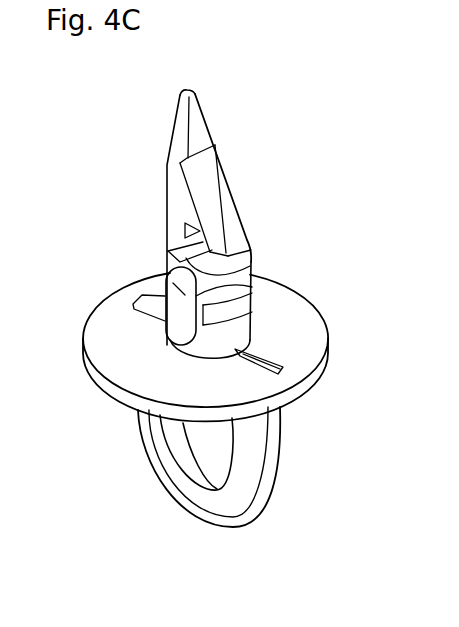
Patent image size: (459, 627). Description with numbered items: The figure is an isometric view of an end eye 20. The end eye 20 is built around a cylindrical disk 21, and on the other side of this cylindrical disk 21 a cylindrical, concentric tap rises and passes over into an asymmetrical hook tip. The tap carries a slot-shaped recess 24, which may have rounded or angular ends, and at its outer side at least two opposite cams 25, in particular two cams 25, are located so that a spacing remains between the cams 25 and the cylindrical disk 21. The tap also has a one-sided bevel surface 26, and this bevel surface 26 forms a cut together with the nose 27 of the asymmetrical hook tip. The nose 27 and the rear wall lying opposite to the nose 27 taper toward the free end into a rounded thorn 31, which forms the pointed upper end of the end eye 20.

The end eye 20 is at (458, 6).
The cylindrical disk 21 is at (288, 342).
The slot-shaped recess 24 is at (168, 275).
The cams 25 is at (235, 300).
The bevel surface 26 is at (227, 267).
The nose 27 is at (226, 214).
The rounded thorn 31 is at (197, 130).